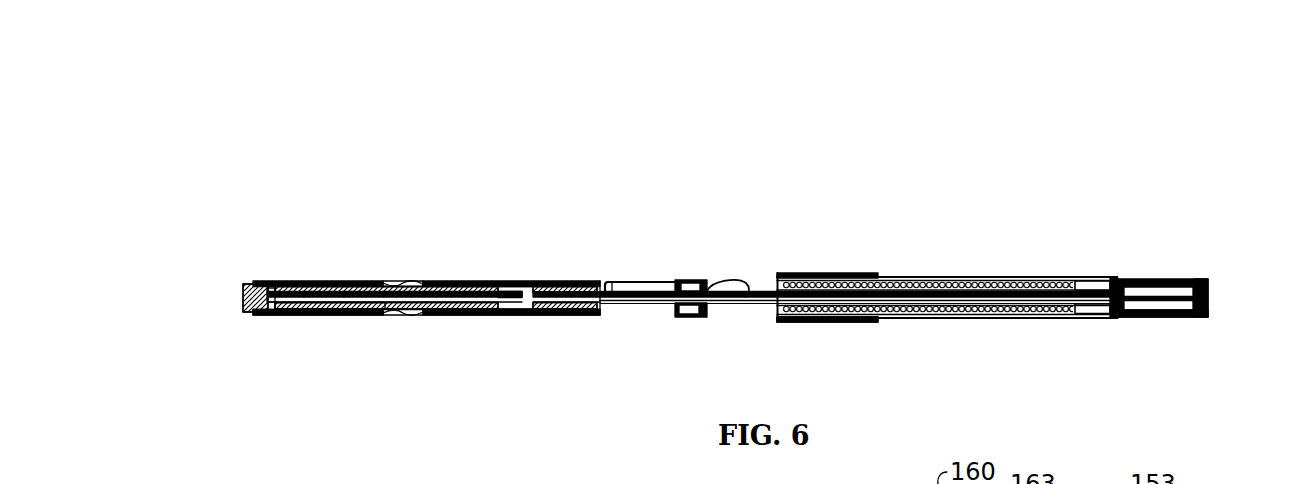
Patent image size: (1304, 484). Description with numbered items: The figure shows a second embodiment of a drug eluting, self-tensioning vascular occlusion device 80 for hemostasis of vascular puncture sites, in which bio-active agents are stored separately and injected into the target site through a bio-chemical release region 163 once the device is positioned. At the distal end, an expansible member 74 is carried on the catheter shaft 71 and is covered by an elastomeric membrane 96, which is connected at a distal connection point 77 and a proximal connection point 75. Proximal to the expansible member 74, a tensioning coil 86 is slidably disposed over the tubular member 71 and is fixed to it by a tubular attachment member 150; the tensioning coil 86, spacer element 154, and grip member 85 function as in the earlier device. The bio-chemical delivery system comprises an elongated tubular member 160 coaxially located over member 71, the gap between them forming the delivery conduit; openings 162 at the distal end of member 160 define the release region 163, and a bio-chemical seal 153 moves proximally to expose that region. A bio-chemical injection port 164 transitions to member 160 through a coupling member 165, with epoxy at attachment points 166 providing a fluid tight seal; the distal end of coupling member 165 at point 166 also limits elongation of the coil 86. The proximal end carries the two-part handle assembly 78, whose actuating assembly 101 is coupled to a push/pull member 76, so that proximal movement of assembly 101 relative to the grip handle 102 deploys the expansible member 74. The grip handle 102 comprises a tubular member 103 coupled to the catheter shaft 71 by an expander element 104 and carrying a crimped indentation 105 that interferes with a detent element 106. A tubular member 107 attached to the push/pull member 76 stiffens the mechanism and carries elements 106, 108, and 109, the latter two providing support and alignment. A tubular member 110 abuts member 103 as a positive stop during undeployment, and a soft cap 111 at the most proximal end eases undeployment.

The handle assembly 78 is at (406, 132).
The vascular occlusion device 80 is at (1080, 145).
The catheter shaft 71 is at (641, 318).
The expansible member 74 is at (1151, 278).
The proximal connection point 75 is at (1117, 279).
The push/pull member 76 is at (910, 278).
The distal connection point 77 is at (1207, 279).
The grip member 85 is at (858, 320).
The tensioning coil 86 is at (921, 320).
The elastomeric membrane 96 is at (1162, 320).
The actuating assembly 101 is at (323, 274).
The grip handle 102 is at (617, 326).
The tubular member 103 is at (525, 280).
The expander element 104 is at (601, 280).
The indentation 105 is at (399, 282).
The detent element 106 is at (420, 319).
The tubular member 107 is at (503, 280).
The support element 108 is at (480, 319).
The support element 109 is at (330, 320).
The tubular member 110 is at (310, 320).
The cap 111 is at (240, 280).
The attachment member 150 is at (1068, 320).
The bio-chemical seal 153 is at (1027, 278).
The spacer element 154 is at (853, 277).
The elongated tubular member 160 is at (786, 319).
The openings 162 is at (1090, 320).
The bio-chemical release region 163 is at (1104, 250).
The bio-chemical injection port 164 is at (654, 280).
The coupling member 165 is at (690, 281).
The attachment point 166 is at (742, 318).